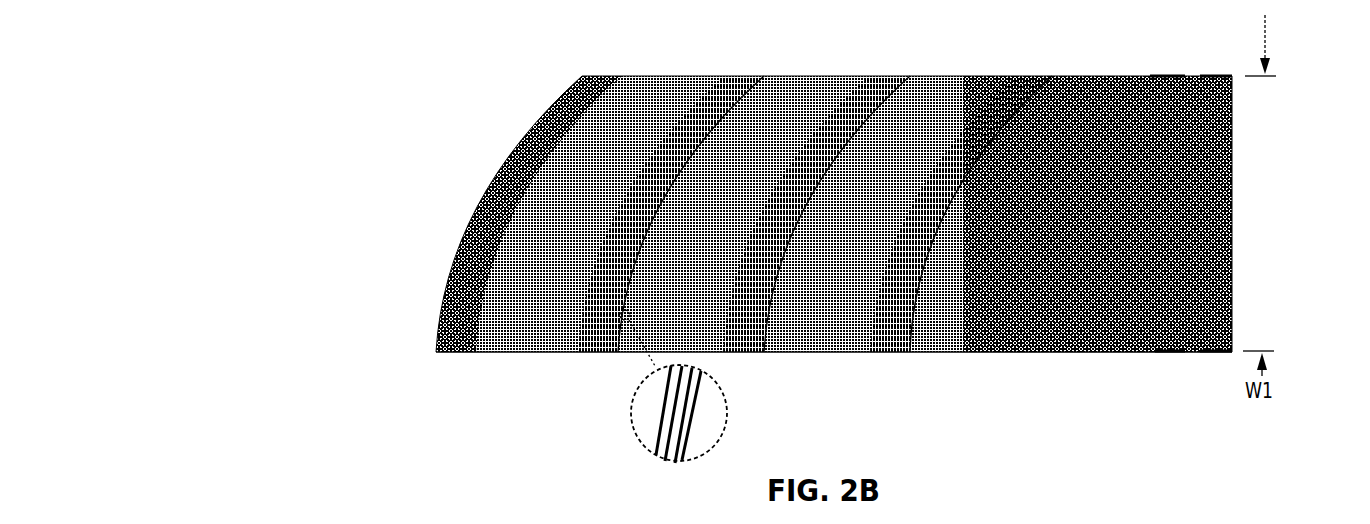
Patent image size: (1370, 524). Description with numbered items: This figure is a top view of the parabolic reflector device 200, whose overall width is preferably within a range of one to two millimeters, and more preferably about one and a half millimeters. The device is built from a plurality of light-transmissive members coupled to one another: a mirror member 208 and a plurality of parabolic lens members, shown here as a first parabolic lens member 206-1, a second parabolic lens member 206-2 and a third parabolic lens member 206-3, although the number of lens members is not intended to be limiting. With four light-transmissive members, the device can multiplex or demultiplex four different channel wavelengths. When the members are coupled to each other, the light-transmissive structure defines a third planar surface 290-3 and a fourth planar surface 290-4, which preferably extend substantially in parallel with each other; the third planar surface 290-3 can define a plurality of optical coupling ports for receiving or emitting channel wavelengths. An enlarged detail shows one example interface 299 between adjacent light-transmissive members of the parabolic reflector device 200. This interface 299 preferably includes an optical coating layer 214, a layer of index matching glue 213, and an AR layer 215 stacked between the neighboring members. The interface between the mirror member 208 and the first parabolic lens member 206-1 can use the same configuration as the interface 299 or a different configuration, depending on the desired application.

The parabolic reflector device 200 is at (465, 100).
The first parabolic lens member 206-1 is at (953, 83).
The second parabolic lens member 206-2 is at (827, 83).
The third parabolic lens member 206-3 is at (688, 83).
The third planar surface 290-3 is at (500, 354).
The fourth planar surface 290-4 is at (1063, 75).
The mirror member 208 is at (1106, 340).
The interface 299 is at (735, 378).
The layer of index matching glue 213 is at (665, 465).
The optical coating layer 214 is at (682, 465).
The AR layer 215 is at (655, 457).